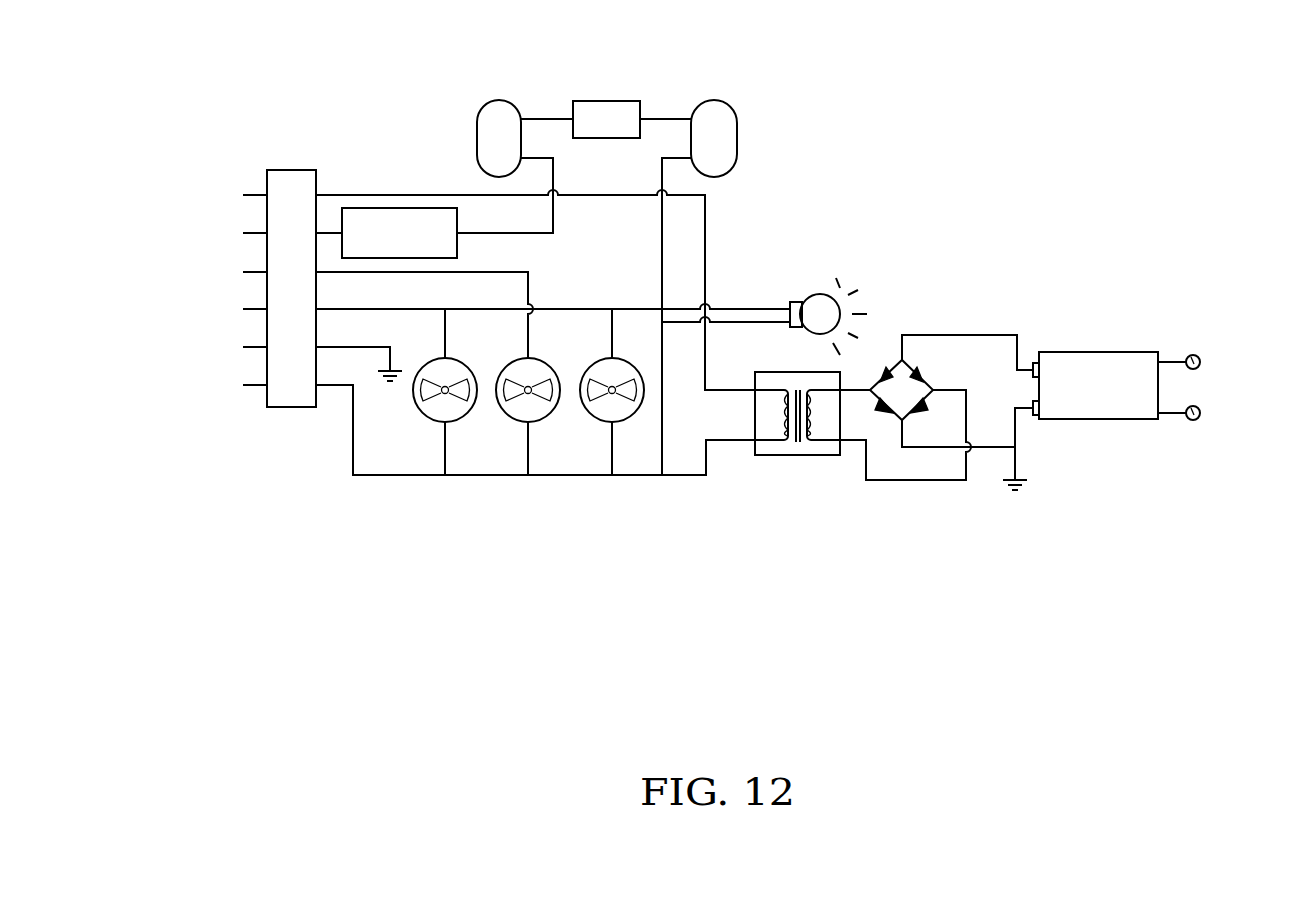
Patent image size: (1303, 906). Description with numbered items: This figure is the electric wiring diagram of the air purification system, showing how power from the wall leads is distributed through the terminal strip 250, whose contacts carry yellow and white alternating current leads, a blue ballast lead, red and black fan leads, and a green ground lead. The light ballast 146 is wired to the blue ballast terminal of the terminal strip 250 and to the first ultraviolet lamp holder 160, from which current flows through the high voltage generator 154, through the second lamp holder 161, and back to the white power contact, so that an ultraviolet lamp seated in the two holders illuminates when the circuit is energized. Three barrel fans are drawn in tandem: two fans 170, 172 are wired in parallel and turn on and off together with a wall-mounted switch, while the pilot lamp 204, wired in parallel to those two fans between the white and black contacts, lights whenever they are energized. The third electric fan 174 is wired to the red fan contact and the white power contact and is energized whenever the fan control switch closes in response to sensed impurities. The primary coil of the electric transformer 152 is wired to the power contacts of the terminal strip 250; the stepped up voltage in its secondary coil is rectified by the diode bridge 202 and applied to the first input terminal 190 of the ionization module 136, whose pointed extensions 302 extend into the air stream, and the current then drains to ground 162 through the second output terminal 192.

The terminal strip 250 is at (290, 170).
The light ballast 146 is at (427, 222).
The first ultraviolet lamp holder 160 is at (500, 100).
The high voltage generator 154 is at (605, 101).
The second lamp holder 161 is at (713, 100).
The barrel fan 170 is at (435, 410).
The third electric fan 174 is at (518, 410).
The barrel fan 172 is at (605, 410).
The pilot lamp 204 is at (819, 313).
The electric transformer 152 is at (790, 448).
The diode bridge 202 is at (885, 363).
The first input terminal 190 is at (1034, 363).
The second output terminal 192 is at (1037, 418).
The ionization module 136 is at (1090, 410).
The pointed extensions 302 is at (1193, 355).
The ground 162 is at (385, 386).